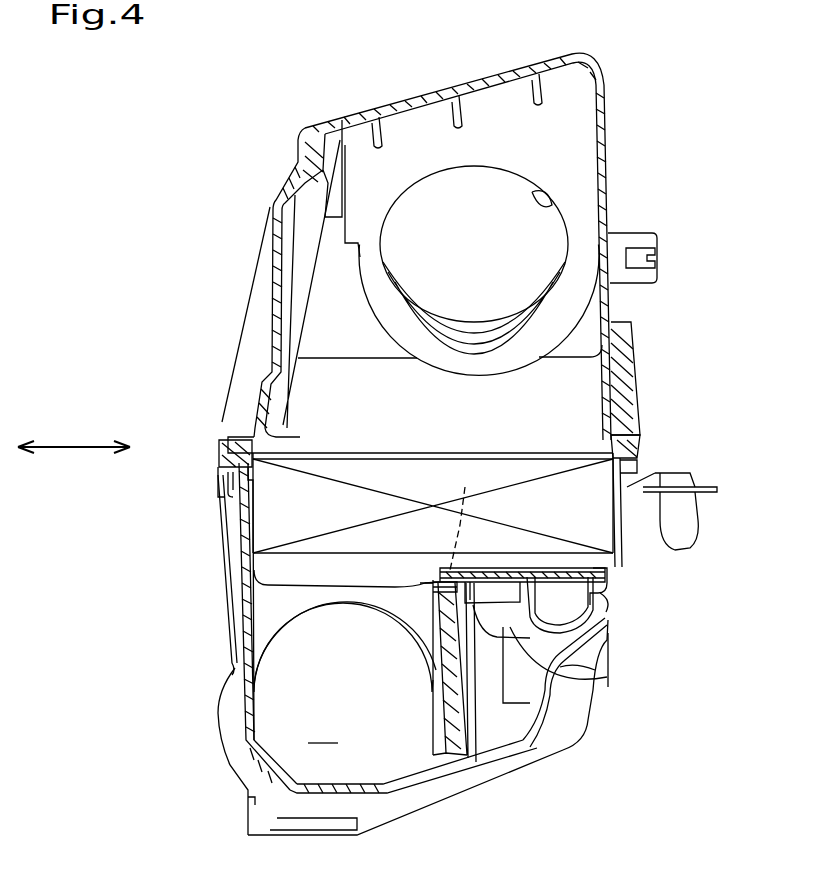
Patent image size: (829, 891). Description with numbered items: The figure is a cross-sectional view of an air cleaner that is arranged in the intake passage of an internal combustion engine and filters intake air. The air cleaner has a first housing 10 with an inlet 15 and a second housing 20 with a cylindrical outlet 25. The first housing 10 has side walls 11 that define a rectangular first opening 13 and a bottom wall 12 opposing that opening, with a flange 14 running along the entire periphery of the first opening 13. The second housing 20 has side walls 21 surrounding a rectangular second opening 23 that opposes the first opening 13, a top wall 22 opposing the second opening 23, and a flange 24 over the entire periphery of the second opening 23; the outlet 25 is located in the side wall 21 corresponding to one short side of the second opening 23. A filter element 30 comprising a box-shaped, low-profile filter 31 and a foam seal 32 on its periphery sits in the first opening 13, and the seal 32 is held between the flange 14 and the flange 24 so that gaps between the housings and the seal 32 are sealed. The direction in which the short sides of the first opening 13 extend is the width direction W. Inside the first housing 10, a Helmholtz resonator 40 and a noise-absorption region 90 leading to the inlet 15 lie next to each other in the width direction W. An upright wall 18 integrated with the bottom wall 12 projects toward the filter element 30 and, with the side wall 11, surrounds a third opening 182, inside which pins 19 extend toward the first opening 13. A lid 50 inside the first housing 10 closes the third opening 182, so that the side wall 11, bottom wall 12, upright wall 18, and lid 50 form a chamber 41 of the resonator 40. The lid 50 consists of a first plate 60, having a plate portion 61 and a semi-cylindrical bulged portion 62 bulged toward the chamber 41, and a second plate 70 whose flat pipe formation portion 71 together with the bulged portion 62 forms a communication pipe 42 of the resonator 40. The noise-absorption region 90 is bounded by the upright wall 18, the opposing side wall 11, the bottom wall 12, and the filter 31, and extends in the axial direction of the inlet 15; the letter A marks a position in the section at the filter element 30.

The first housing 10 is at (222, 790).
The side walls 11 is at (227, 689).
The bottom wall 12 is at (383, 790).
The first opening 13 is at (251, 485).
The flange 14 is at (221, 502).
The inlet 15 is at (338, 608).
The upright wall 18 is at (433, 690).
The pins 19 is at (433, 607).
The third opening 182 is at (603, 598).
The second housing 20 is at (280, 131).
The side walls 21 is at (272, 289).
The top wall 22 is at (423, 95).
The second opening 23 is at (272, 441).
The flange 24 is at (233, 425).
The outlet 25 is at (543, 200).
The filter element 30 is at (526, 443).
The filter 31 is at (430, 462).
The seal 32 is at (629, 420).
The resonator 40 is at (688, 655).
The chamber 41 is at (512, 725).
The communication pipe 42 is at (593, 627).
The lid 50 is at (735, 425).
The first plate 60 is at (617, 577).
The plate portion 61 is at (517, 567).
The bulged portion 62 is at (590, 628).
The second plate 70 is at (610, 563).
The pipe formation portion 71 is at (567, 567).
The noise-absorption region 90 is at (323, 730).
The section line A is at (460, 514).
The width direction W is at (74, 430).